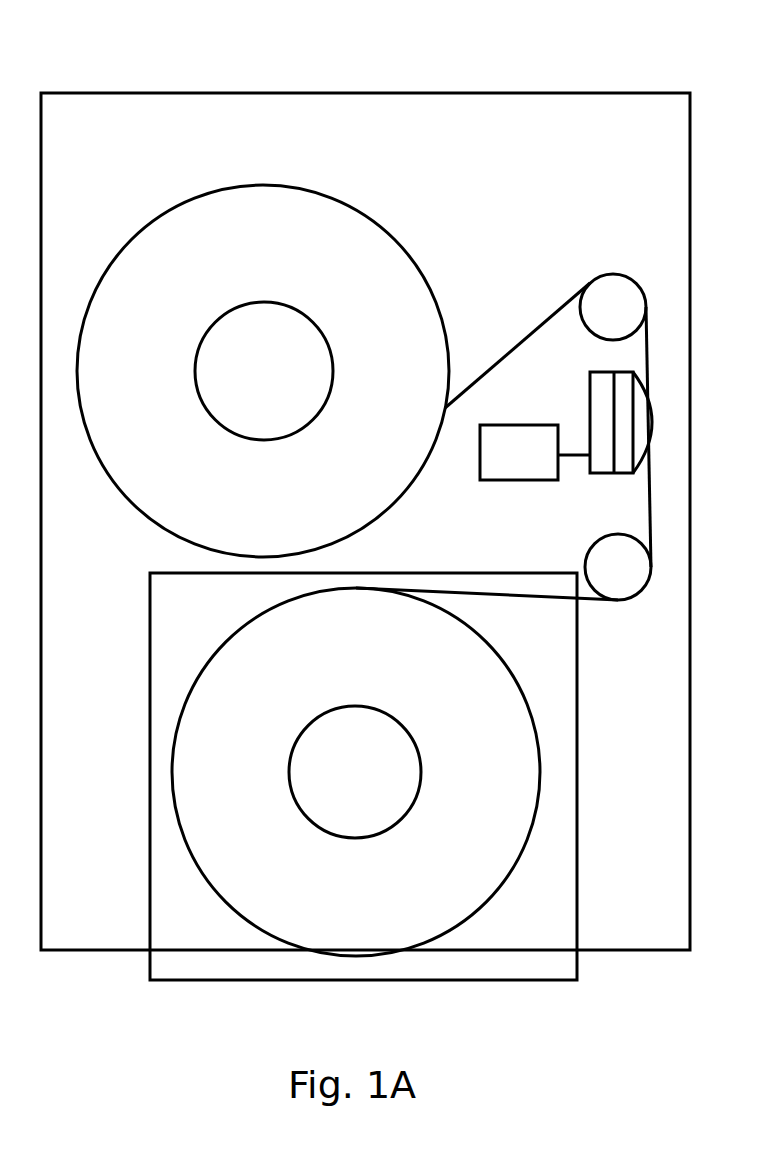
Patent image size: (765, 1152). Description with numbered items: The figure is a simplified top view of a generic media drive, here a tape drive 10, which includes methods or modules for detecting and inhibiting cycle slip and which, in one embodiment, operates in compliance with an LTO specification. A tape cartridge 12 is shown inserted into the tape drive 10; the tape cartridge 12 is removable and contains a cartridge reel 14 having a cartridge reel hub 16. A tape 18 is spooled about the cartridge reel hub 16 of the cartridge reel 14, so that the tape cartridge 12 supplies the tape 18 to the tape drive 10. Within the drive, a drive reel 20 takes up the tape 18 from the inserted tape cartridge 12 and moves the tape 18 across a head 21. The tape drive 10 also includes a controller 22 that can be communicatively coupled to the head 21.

The tape drive 10 is at (147, 68).
The tape cartridge 12 is at (577, 686).
The cartridge reel 14 is at (530, 700).
The cartridge reel hub 16 is at (420, 752).
The tape 18 is at (558, 312).
The drive reel 20 is at (380, 515).
The head 21 is at (590, 393).
The controller 22 is at (538, 470).